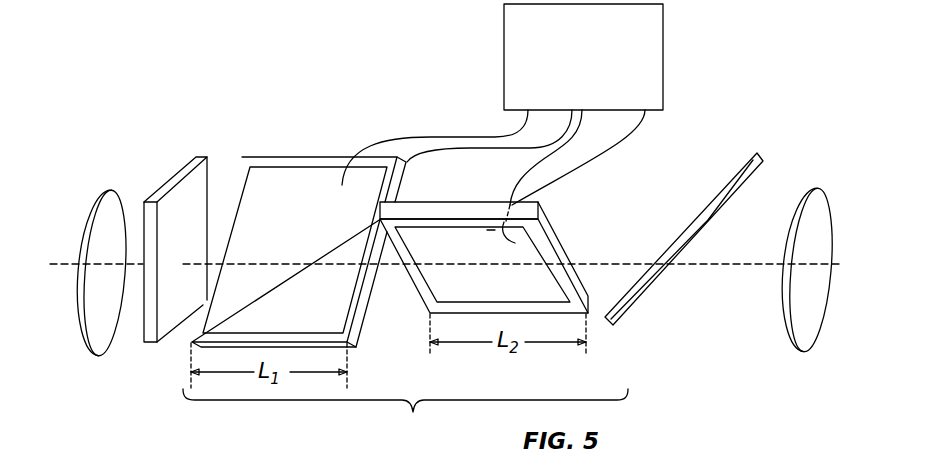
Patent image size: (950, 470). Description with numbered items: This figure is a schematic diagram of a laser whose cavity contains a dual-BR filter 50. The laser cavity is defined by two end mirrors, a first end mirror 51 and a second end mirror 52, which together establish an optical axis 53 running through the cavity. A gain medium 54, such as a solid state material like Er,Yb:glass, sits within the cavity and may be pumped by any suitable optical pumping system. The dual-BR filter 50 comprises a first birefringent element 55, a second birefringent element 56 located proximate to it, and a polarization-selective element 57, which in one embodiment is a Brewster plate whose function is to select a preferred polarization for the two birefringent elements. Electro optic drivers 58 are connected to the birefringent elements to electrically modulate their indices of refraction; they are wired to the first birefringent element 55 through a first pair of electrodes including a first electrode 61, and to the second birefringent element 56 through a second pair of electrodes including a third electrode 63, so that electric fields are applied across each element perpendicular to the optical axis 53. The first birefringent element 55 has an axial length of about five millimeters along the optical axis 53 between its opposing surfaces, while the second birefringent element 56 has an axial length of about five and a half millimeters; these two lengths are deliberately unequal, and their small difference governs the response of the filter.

The dual-BR filter 50 is at (405, 417).
The first end mirror 51 is at (110, 191).
The second end mirror 52 is at (817, 184).
The optical axis 53 is at (68, 264).
The gain medium 54 is at (192, 165).
The first birefringent element 55 is at (262, 160).
The second birefringent element 56 is at (553, 239).
The polarization-selective element 57 is at (683, 233).
The electro optic drivers 58 is at (504, 33).
The first electrode 61 is at (302, 185).
The third electrode 63 is at (442, 277).